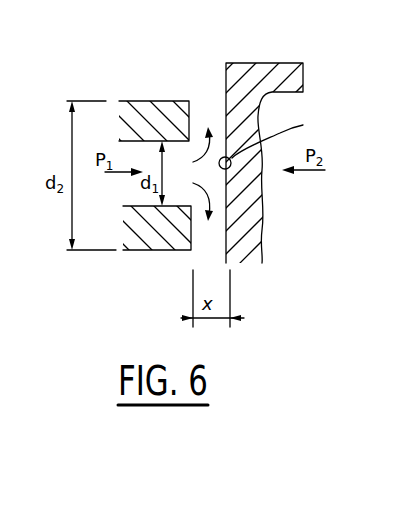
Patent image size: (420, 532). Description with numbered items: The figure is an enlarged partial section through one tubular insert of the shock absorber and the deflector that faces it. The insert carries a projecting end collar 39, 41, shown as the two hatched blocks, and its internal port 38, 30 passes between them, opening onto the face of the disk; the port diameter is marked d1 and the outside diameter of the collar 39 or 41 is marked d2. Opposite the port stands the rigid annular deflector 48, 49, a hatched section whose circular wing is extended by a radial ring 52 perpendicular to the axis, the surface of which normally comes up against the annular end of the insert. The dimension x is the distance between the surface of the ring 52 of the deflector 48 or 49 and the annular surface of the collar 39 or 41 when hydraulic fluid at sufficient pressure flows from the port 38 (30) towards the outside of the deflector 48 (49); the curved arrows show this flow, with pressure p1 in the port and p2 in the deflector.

The end collar 39 is at (147, 89).
The collar 41 is at (146, 101).
The internal port 38 is at (153, 252).
The internal port 30 is at (137, 203).
The annular deflector 48 is at (273, 138).
The annular deflector 49 is at (256, 60).
The radial ring 52 is at (277, 142).